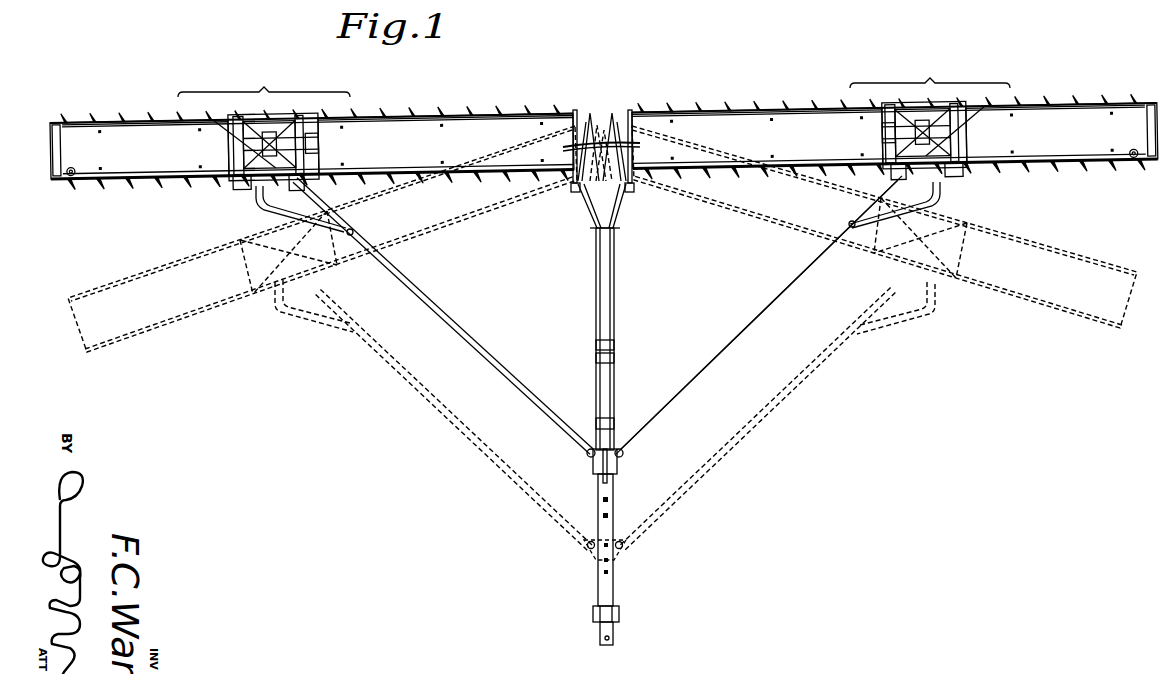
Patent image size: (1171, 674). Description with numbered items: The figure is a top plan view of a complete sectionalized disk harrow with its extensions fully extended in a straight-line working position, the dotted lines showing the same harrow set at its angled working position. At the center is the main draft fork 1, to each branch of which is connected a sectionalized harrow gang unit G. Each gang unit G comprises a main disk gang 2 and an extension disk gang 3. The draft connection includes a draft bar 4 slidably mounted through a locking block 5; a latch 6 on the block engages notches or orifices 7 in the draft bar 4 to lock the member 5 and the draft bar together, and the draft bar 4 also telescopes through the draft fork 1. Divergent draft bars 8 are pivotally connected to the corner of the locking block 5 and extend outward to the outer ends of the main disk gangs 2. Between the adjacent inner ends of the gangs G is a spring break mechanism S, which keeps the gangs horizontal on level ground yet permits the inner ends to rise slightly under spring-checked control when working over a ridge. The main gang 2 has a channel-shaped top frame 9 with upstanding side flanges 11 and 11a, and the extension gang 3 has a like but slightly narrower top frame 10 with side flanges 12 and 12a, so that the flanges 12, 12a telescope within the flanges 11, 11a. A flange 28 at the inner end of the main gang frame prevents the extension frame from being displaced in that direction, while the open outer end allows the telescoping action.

The main draft fork 1 is at (618, 300).
The main disk gang 2 is at (603, 108).
The extension disk gang 3 is at (604, 133).
The draft bar 4 is at (615, 579).
The locking block 5 is at (594, 462).
The latch 6 is at (618, 462).
The notches or orifices 7 is at (611, 500).
The divergent draft bars 8 is at (478, 346).
The top frame 9 is at (473, 160).
The top frame 10 is at (170, 165).
The side flange 11 is at (401, 177).
The side flange 11a is at (397, 114).
The side flange 12 is at (112, 185).
The side flange 12a is at (108, 122).
The flange 28 is at (573, 156).
The gang unit G is at (594, 125).
The spring break mechanism S is at (598, 140).